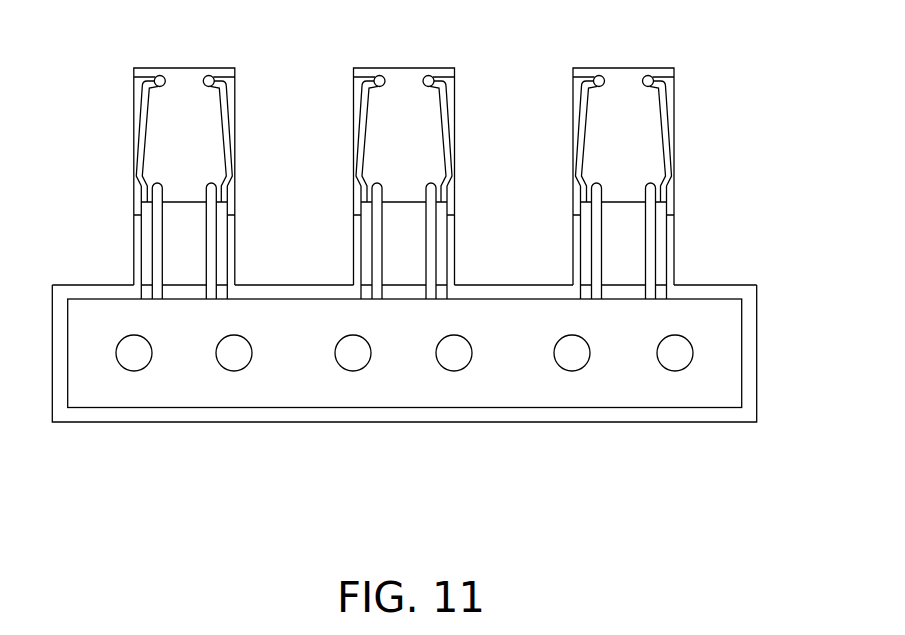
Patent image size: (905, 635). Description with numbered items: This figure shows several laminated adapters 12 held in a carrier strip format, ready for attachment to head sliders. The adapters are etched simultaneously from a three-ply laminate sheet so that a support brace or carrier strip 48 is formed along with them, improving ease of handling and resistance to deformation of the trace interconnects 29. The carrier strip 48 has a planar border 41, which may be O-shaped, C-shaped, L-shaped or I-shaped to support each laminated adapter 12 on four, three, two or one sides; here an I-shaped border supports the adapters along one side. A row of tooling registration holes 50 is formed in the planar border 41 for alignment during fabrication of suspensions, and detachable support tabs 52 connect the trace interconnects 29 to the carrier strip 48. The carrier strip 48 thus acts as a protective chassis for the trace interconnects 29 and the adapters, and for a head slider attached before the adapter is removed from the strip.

The laminated adapter 12 is at (405, 62).
The trace interconnect 29 is at (667, 113).
The detachable support tab 52 is at (668, 262).
The carrier strip 48 is at (752, 337).
The planar border 41 is at (752, 388).
The tooling registration hole 50 is at (571, 361).